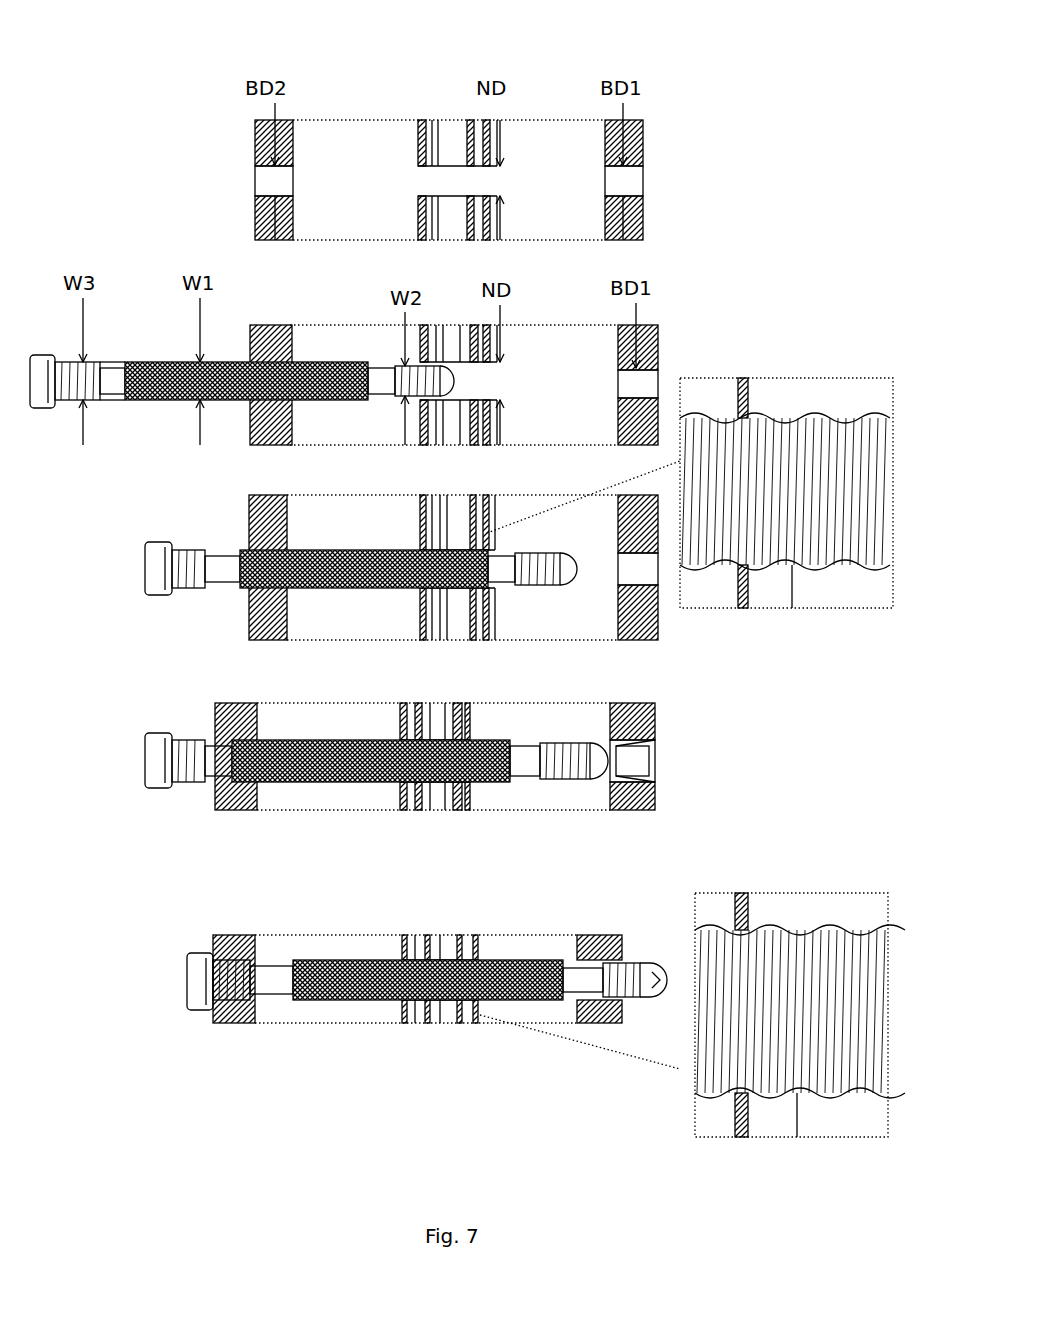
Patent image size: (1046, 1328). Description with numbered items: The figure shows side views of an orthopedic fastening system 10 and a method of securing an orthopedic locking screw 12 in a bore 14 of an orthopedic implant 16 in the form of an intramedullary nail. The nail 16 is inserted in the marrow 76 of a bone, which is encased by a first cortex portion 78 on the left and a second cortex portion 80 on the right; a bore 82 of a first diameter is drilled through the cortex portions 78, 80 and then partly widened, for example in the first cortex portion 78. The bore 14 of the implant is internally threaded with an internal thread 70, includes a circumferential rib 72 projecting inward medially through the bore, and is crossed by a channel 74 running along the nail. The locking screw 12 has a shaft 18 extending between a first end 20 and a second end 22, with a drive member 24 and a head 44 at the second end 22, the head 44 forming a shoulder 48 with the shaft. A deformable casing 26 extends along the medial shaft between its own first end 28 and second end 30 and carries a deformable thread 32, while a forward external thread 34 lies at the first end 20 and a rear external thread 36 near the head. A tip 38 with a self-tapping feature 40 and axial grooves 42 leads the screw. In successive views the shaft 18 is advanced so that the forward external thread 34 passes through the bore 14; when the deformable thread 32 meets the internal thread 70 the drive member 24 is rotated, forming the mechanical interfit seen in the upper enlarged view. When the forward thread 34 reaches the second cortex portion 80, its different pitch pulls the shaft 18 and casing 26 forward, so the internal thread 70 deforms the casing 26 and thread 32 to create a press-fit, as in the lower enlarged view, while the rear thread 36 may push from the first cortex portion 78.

The orthopedic fastening system 10 is at (754, 54).
The orthopedic locking screw 12 is at (333, 368).
The bore 14 is at (482, 180).
The orthopedic implant 16 is at (428, 128).
The shaft 18 is at (96, 370).
The first end 20 is at (642, 762).
The second end 22 is at (165, 597).
The drive member 24 is at (142, 570).
The casing 26 is at (255, 425).
The first end 28 is at (367, 342).
The second end 30 is at (121, 398).
The deformable thread 32 is at (311, 403).
The forward external thread 34 is at (488, 432).
The rear external thread 36 is at (84, 403).
The tip 38 is at (622, 745).
The self-tapping feature 40 is at (640, 790).
The axial grooves 42 is at (601, 800).
The head 44 is at (47, 410).
The shoulder 48 is at (176, 550).
The internal thread 70 is at (486, 382).
The circumferential rib 72 is at (448, 232).
The channel 74 is at (452, 128).
The marrow 76 is at (350, 130).
The first cortex portion 78 is at (268, 158).
The second cortex portion 80 is at (648, 133).
The bore 82 is at (645, 183).